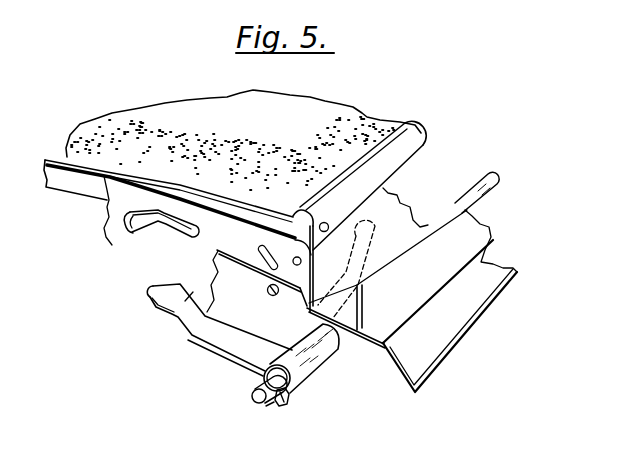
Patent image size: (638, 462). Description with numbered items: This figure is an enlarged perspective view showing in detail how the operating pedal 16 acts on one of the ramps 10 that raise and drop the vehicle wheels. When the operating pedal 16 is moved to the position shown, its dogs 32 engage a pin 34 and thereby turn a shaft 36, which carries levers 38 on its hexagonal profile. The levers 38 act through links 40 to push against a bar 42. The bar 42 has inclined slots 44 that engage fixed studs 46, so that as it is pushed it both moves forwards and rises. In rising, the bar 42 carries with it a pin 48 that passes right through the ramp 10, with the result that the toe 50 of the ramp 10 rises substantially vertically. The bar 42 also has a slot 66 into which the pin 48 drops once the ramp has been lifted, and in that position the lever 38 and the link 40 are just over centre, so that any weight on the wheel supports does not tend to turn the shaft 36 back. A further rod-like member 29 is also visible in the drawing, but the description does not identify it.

The ramp 10 is at (348, 118).
The toe 50 is at (415, 143).
The rod 29 is at (484, 178).
The link 40 is at (343, 233).
The slot 66 is at (125, 228).
The bar 42 is at (143, 242).
The pin 48 is at (188, 237).
The inclined slot 44 is at (262, 251).
The stud 46 is at (268, 289).
The operating pedal 16 is at (218, 341).
The shaft 36 is at (255, 394).
The dog 32 is at (266, 405).
The pin 34 is at (288, 397).
The lever 38 is at (356, 322).